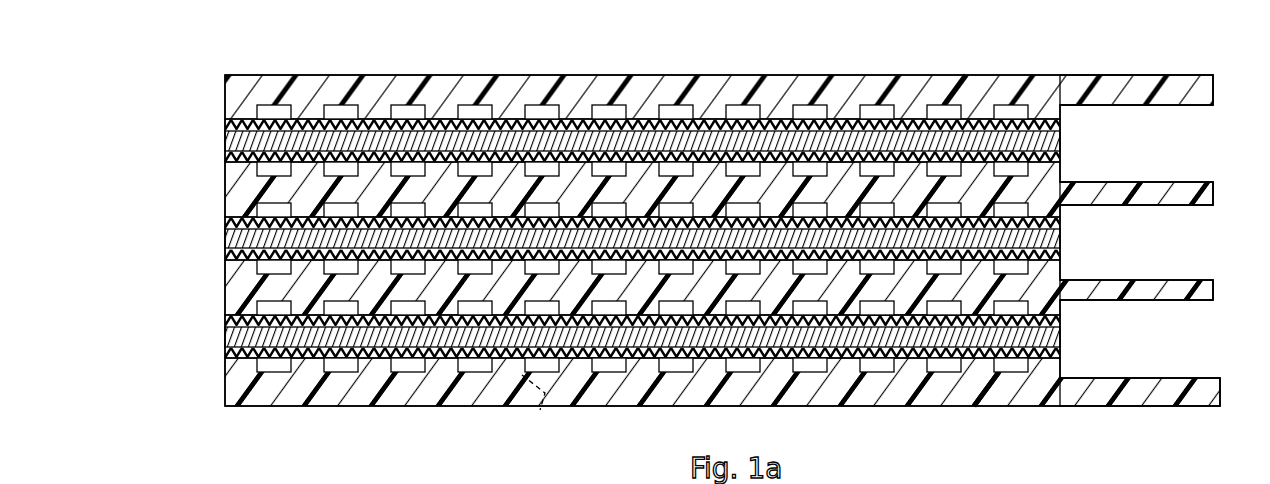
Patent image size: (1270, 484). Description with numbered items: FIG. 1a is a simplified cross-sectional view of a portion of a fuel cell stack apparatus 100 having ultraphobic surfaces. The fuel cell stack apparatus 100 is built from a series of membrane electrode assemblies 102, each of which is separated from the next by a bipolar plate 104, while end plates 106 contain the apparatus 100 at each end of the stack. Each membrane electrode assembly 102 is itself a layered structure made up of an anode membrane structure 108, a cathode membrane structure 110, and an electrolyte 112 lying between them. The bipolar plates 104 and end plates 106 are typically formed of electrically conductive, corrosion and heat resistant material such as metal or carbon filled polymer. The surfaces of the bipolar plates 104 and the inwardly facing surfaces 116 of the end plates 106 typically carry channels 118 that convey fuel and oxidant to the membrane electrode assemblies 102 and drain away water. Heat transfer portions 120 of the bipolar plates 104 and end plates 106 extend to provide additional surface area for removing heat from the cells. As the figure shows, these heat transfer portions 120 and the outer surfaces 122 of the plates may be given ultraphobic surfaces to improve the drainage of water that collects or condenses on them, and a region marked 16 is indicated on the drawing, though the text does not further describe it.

The fuel cell stack apparatus 100 is at (1114, 73).
The membrane electrode assembly 102 is at (624, 227).
The bipolar plate 104 is at (226, 163).
The end plate 106 is at (883, 396).
The anode membrane structure 108 is at (226, 218).
The cathode membrane structure 110 is at (226, 122).
The electrolyte 112 is at (226, 140).
The inwardly facing surface 116 is at (963, 120).
The channel 118 is at (743, 373).
The heat transfer portion 120 is at (1183, 106).
The outer surface 122 is at (488, 76).
The detail region 16 is at (537, 415).